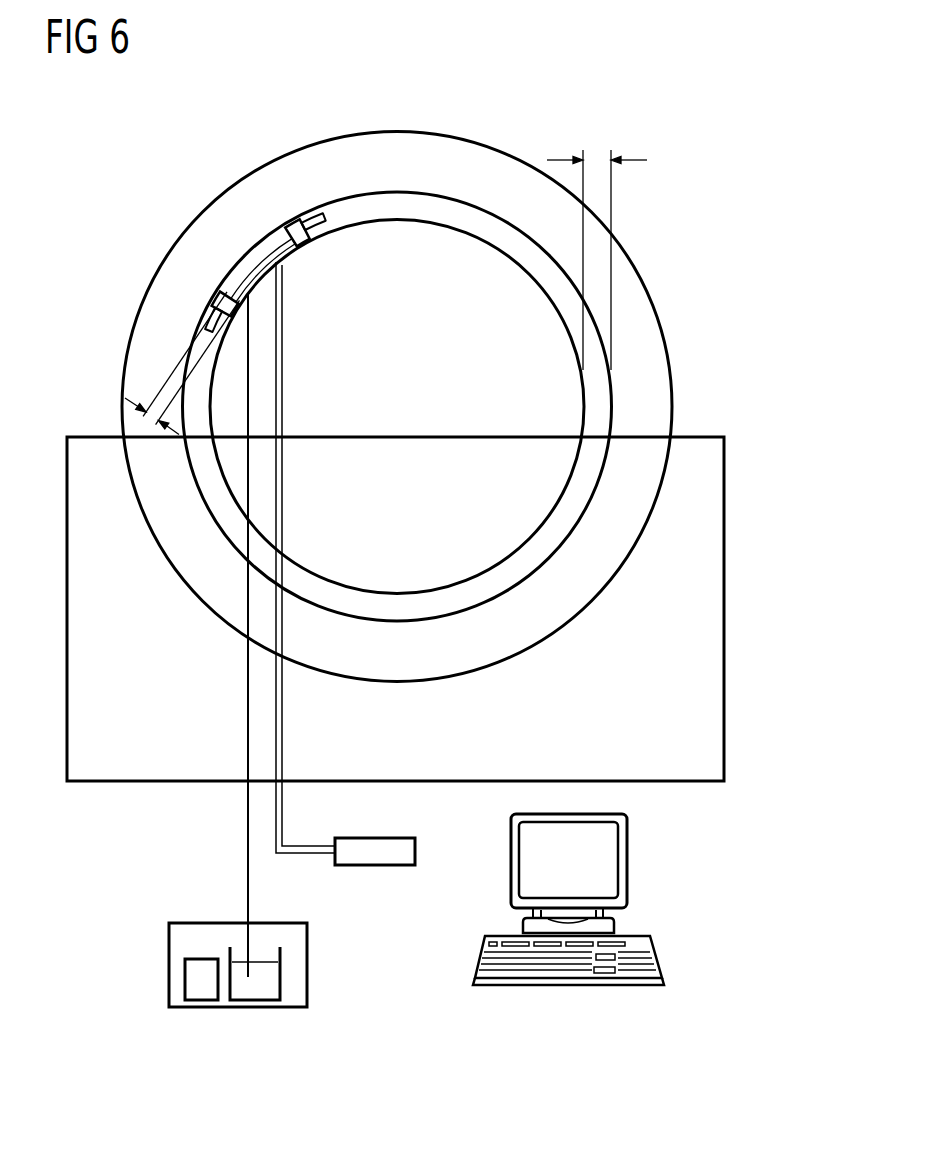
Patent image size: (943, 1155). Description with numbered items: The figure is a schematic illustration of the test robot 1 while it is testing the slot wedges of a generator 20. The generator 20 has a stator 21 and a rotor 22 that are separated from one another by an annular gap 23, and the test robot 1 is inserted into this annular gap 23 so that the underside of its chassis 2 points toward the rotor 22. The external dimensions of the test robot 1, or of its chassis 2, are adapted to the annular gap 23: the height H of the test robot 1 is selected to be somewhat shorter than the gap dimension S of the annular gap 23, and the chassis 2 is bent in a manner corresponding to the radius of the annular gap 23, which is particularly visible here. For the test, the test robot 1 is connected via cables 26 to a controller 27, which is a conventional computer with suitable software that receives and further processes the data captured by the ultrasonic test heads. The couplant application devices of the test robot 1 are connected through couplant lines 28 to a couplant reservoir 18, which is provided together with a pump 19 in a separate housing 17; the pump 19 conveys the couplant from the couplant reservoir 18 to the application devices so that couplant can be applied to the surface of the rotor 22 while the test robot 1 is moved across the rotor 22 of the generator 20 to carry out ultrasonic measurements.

The test robot 1 is at (253, 226).
The chassis 2 is at (285, 235).
The housing 17 is at (201, 999).
The couplant reservoir 18 is at (263, 990).
The pump 19 is at (201, 990).
The generator 20 is at (395, 423).
The stator 21 is at (438, 153).
The rotor 22 is at (386, 238).
The annular gap 23 is at (477, 220).
The cables 26 is at (283, 714).
The controller 27 is at (597, 1026).
The couplant lines 28 is at (248, 862).
The gap dimension S is at (596, 160).
The height H is at (152, 432).